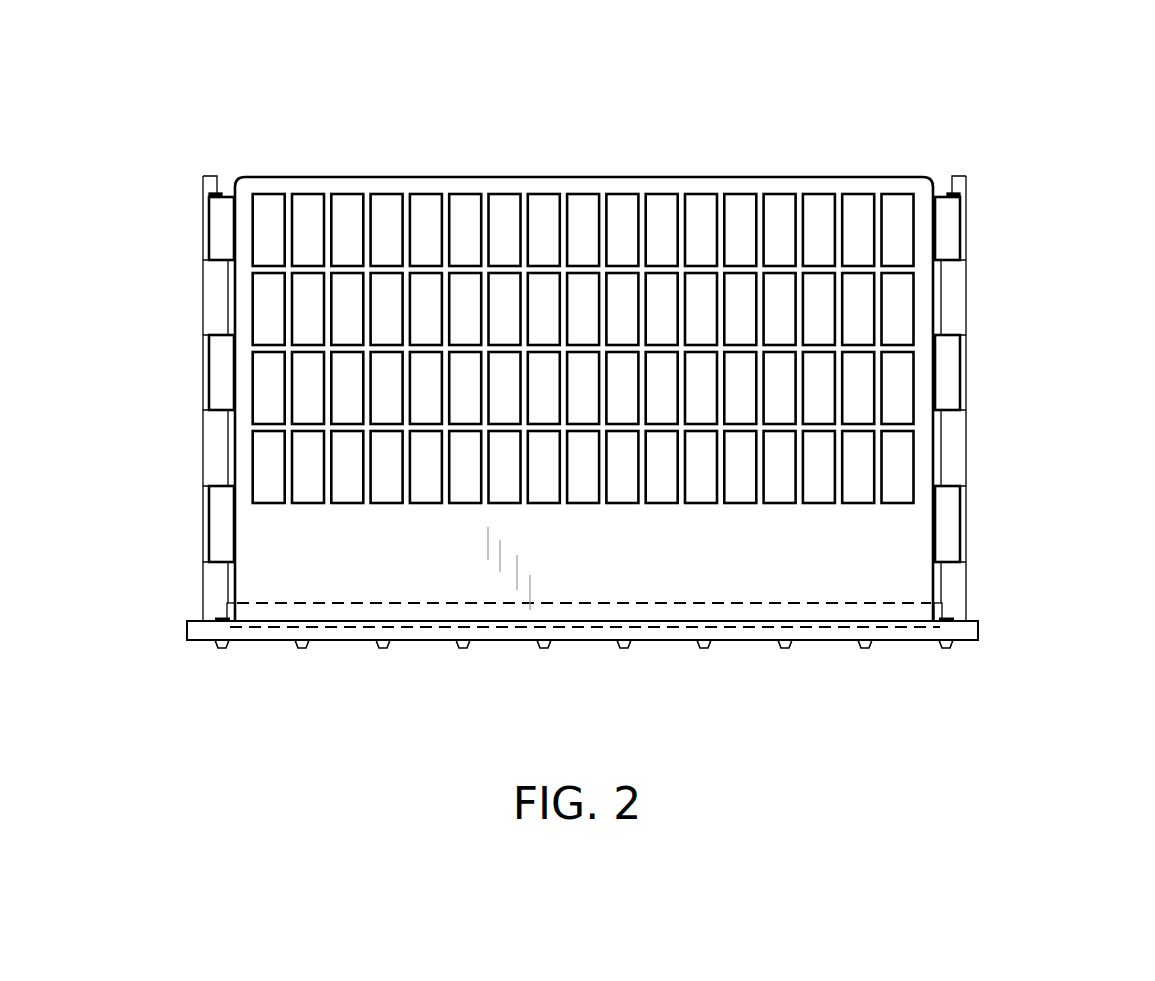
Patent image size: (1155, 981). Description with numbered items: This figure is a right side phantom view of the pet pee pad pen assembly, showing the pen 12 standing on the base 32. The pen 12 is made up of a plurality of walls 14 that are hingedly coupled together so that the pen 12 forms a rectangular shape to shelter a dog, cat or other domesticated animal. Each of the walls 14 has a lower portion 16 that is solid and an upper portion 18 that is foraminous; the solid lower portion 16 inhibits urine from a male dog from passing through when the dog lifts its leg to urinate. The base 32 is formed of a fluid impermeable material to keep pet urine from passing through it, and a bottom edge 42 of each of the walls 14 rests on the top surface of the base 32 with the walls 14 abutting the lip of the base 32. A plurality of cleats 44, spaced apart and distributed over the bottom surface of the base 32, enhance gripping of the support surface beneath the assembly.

The pen 12 is at (619, 396).
The walls 14 is at (546, 177).
The lower portion 16 is at (408, 562).
The upper portion 18 is at (424, 248).
The base 32 is at (968, 630).
The bottom edge 42 is at (867, 622).
The cleats 44 is at (460, 642).